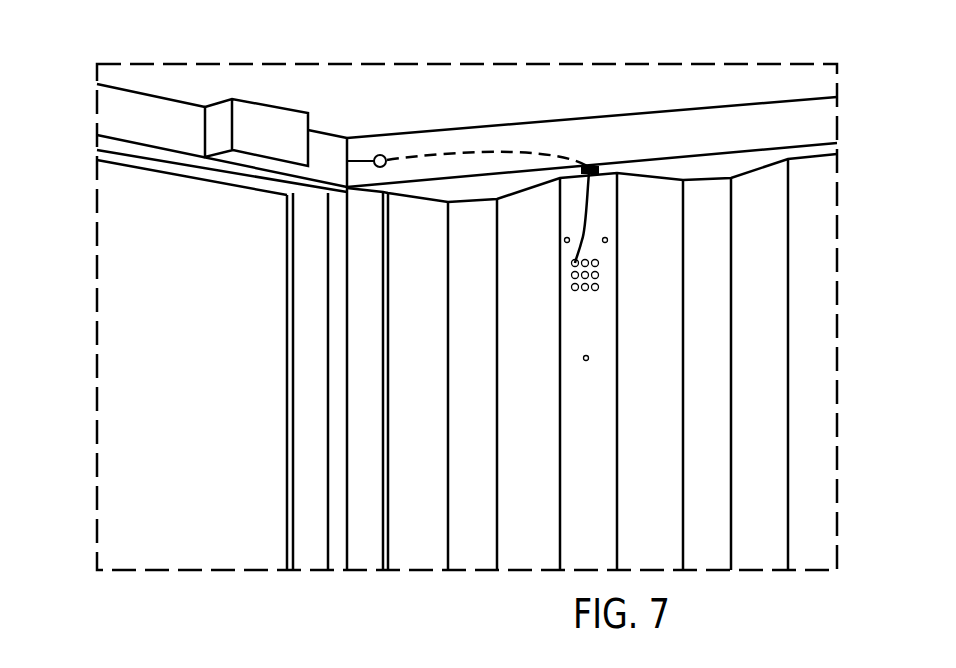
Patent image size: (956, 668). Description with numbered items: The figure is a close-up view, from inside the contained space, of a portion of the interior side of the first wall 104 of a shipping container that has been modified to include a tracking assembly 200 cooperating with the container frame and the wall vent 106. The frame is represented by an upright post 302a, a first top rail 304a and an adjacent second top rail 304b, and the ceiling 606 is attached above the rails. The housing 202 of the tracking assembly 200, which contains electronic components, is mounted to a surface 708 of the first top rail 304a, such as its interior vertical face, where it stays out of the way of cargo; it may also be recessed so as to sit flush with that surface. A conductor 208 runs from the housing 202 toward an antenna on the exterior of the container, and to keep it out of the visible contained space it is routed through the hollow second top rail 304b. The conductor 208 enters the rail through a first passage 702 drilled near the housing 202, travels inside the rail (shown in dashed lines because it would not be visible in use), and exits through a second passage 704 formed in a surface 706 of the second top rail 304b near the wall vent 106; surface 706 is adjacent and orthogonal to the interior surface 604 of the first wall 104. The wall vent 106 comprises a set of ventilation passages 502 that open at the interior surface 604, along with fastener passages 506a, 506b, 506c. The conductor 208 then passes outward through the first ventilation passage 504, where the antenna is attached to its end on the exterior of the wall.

The tracking assembly 200 is at (267, 300).
The surface of the first top rail 708 is at (177, 130).
The first top rail 304a is at (120, 135).
The second top rail 304b is at (528, 122).
The housing 202 is at (243, 117).
The conductor 208 is at (340, 158).
The post 302a is at (323, 245).
The ceiling 606 is at (618, 95).
The surface of the second top rail 706 is at (713, 182).
The first wall 104 is at (690, 260).
The interior surface of the first wall 604 is at (602, 480).
The set of ventilation passages 502 is at (614, 284).
The first passage 702 is at (380, 155).
The second passage 704 is at (595, 167).
The first ventilation passage 504 is at (575, 265).
The wall vent 106 is at (578, 300).
The fastener passage 506a is at (588, 359).
The fastener passage 506b is at (607, 238).
The fastener passage 506c is at (565, 238).